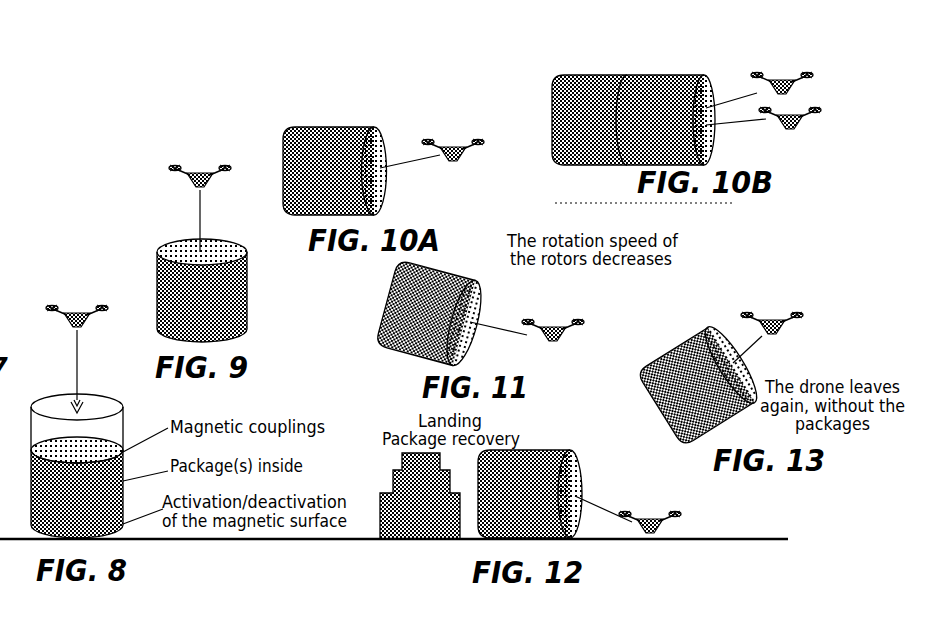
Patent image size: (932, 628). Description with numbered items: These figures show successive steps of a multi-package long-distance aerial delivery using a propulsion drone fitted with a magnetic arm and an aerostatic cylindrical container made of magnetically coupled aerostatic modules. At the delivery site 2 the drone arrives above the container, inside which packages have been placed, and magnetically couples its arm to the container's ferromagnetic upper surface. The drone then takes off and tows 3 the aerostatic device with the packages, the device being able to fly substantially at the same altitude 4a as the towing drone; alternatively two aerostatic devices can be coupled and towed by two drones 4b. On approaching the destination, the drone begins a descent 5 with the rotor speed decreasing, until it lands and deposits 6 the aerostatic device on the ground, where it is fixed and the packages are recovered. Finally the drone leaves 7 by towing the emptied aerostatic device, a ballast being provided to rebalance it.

In FIG. 8, the arrival at the delivery site 2 is at (77, 404).
In FIG. 9, the take-off and towing 3 is at (202, 239).
In FIG. 10A, the towing at the same altitude 4a is at (383, 148).
In FIG. 10B, the towing of two coupled aerostatic devices 4b is at (686, 96).
In FIG. 11, the descent 5 is at (479, 308).
In FIG. 12, the landing and deposition 6 is at (530, 471).
In FIG. 13, the departure of the drone 7 is at (719, 364).